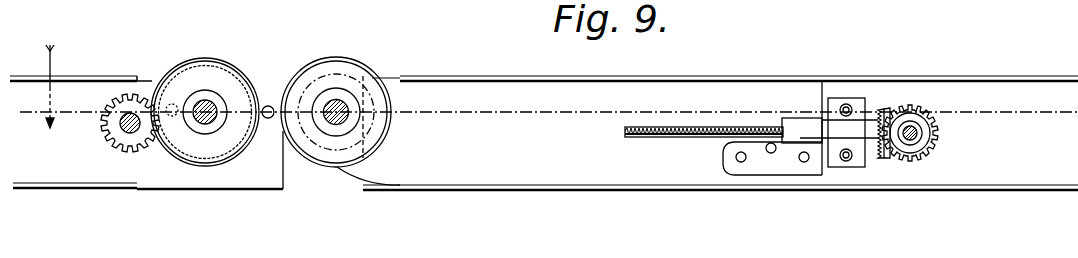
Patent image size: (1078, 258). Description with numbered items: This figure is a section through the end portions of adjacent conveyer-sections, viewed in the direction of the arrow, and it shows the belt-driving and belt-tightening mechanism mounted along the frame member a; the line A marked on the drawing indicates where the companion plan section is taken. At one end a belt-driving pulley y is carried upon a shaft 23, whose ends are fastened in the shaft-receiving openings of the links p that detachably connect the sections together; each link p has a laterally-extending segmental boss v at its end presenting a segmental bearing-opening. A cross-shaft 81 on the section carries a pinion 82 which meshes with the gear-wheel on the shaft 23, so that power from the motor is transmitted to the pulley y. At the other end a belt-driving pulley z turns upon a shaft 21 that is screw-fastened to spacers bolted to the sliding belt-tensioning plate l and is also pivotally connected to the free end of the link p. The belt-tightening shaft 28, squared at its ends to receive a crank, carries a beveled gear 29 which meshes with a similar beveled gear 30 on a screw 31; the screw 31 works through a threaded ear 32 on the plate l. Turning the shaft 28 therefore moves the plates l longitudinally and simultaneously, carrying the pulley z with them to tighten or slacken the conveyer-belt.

The conveyer-section frame member a is at (25, 75).
The section line A is at (33, 89).
The pinion 82 is at (120, 96).
The cross-shaft 81 is at (122, 130).
The belt-driving pulley y is at (188, 48).
The shaft 23 is at (208, 107).
The link p is at (283, 96).
The segmental boss v is at (306, 14).
The belt-driving pulley z is at (362, 77).
The shaft 21 is at (328, 123).
The belt-tensioning plate l is at (373, 165).
The screw 31 is at (650, 135).
The threaded ear 32 is at (792, 127).
The beveled gear 30 is at (882, 108).
The beveled gear 29 is at (923, 112).
The belt-tightening shaft 28 is at (917, 138).